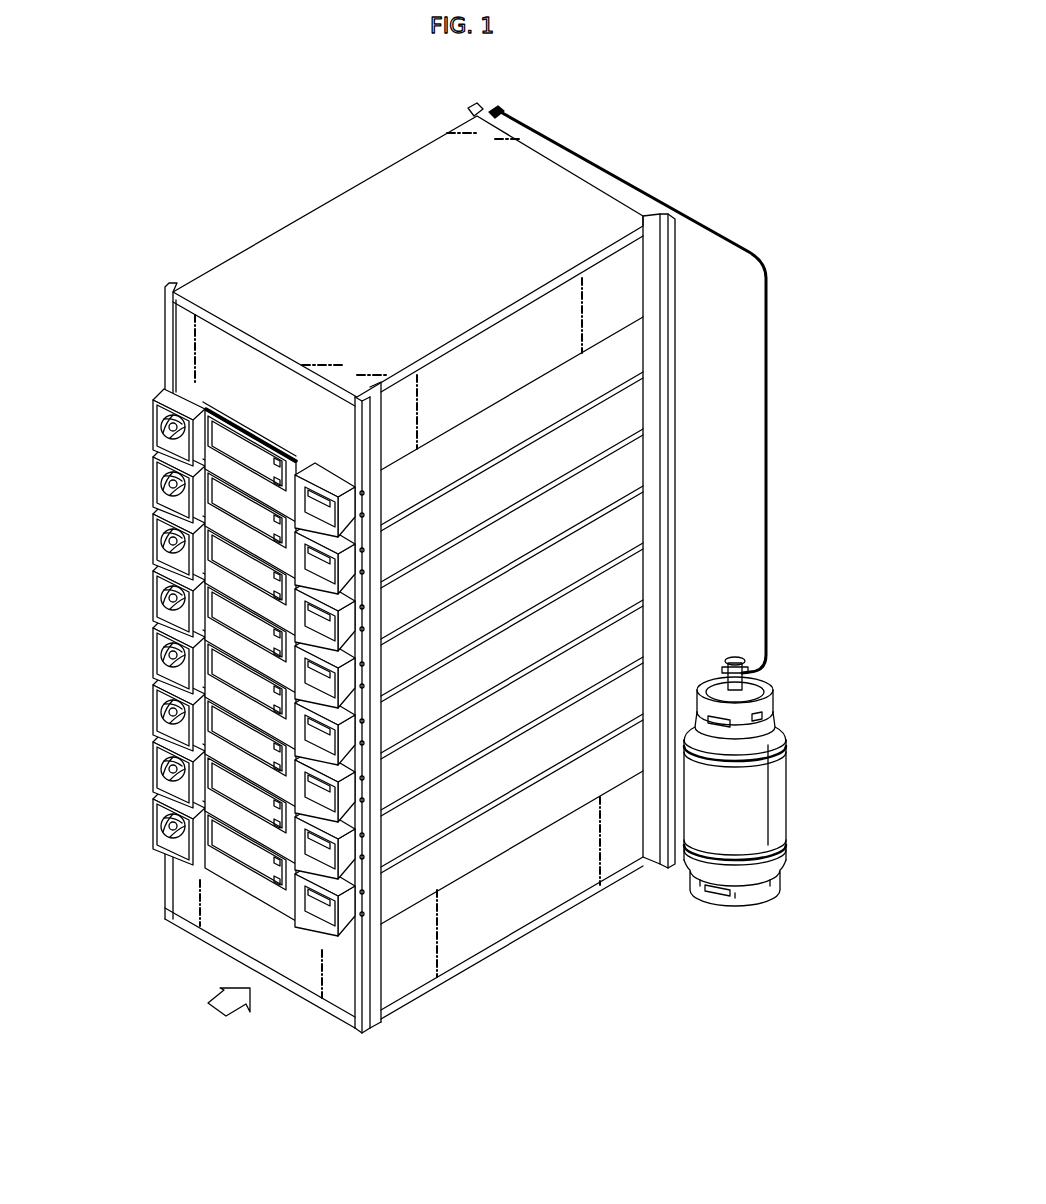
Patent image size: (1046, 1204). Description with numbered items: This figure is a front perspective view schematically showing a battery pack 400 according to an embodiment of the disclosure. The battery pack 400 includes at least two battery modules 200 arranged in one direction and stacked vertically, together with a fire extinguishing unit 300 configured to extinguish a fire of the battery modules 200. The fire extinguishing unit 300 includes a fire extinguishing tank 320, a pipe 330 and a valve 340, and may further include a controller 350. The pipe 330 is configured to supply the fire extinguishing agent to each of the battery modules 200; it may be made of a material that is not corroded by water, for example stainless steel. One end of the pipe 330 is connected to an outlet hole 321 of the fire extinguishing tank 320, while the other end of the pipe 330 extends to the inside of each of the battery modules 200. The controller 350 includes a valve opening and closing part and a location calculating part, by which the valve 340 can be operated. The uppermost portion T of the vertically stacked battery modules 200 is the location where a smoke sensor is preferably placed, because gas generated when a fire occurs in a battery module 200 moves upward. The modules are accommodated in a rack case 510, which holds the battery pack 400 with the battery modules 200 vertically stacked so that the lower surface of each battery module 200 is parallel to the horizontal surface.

The battery pack 400 is at (235, 98).
The battery module 200 is at (219, 662).
The controller 350 is at (142, 346).
The uppermost portion T is at (523, 386).
The fire extinguishing unit 300 is at (777, 1024).
The fire extinguishing tank 320 is at (768, 775).
The outlet hole 321 is at (772, 686).
The pipe 330 is at (639, 389).
The valve 340 is at (746, 676).
The rack case 510 is at (404, 959).